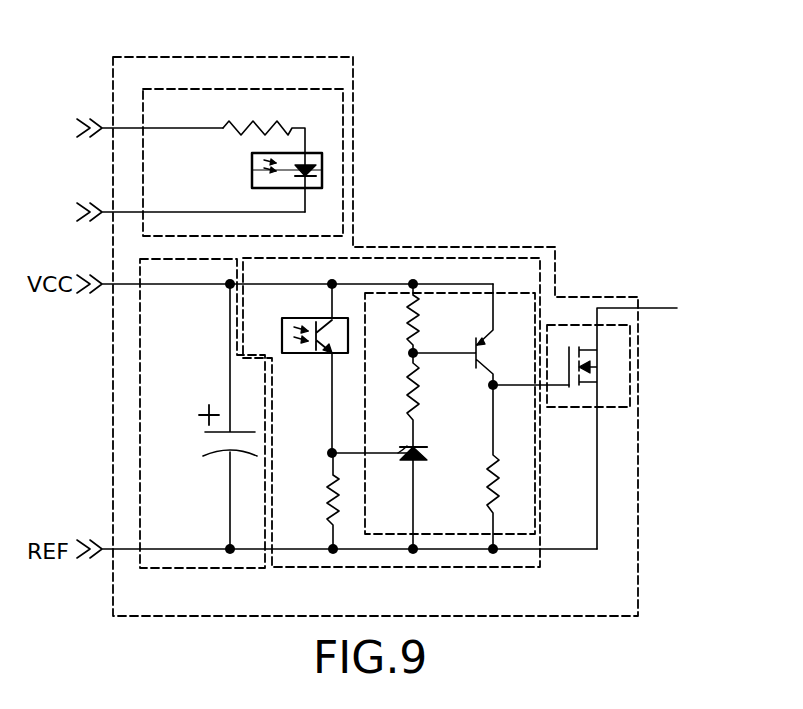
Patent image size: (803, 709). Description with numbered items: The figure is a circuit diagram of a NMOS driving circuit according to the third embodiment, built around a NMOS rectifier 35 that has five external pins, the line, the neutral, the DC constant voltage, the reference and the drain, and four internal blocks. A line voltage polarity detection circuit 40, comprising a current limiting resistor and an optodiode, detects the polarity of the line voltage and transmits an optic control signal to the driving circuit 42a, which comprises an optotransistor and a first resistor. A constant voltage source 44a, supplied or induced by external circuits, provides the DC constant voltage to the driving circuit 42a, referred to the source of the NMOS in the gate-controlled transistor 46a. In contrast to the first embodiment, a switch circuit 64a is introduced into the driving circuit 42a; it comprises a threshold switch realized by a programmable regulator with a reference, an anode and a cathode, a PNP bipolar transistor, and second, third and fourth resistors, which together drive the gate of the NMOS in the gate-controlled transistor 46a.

The NMOS rectifier 35 is at (363, 247).
The line voltage polarity detection circuit 40 is at (343, 185).
The driving circuit 42a is at (426, 378).
The constant voltage source 44a is at (140, 380).
The gate-controlled transistor 46a is at (630, 395).
The switch circuit 64a is at (500, 290).